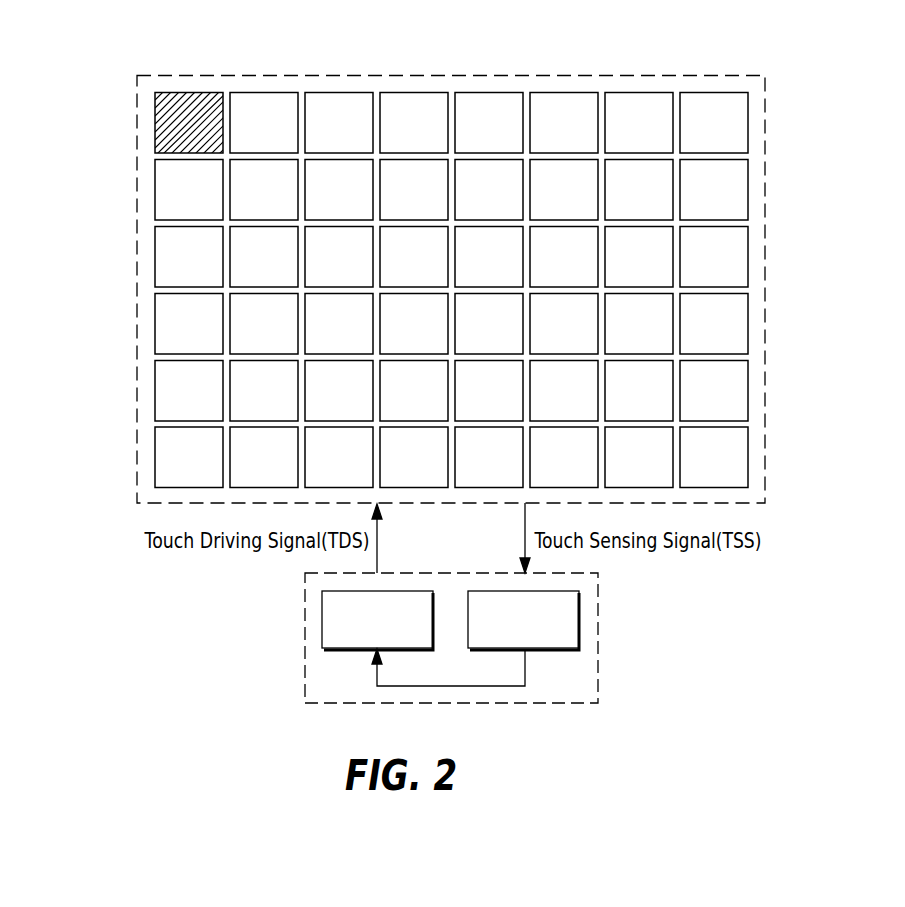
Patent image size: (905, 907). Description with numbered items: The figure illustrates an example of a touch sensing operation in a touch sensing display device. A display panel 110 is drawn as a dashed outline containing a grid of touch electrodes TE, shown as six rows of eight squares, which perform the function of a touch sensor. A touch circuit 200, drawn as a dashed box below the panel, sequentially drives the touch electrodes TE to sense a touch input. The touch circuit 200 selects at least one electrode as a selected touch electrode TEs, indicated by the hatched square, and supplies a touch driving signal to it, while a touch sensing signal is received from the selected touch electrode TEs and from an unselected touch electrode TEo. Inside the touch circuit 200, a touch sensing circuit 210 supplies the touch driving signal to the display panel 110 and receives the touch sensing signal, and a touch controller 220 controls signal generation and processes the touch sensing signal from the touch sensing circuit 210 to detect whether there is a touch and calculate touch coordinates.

The display panel 110 is at (645, 75).
The touch electrodes TE is at (388, 290).
The selected touch electrode TEs is at (155, 125).
The unselected touch electrode TEo is at (147, 190).
The touch circuit 200 is at (483, 638).
The touch sensing circuit 210 is at (506, 632).
The touch controller 220 is at (360, 632).